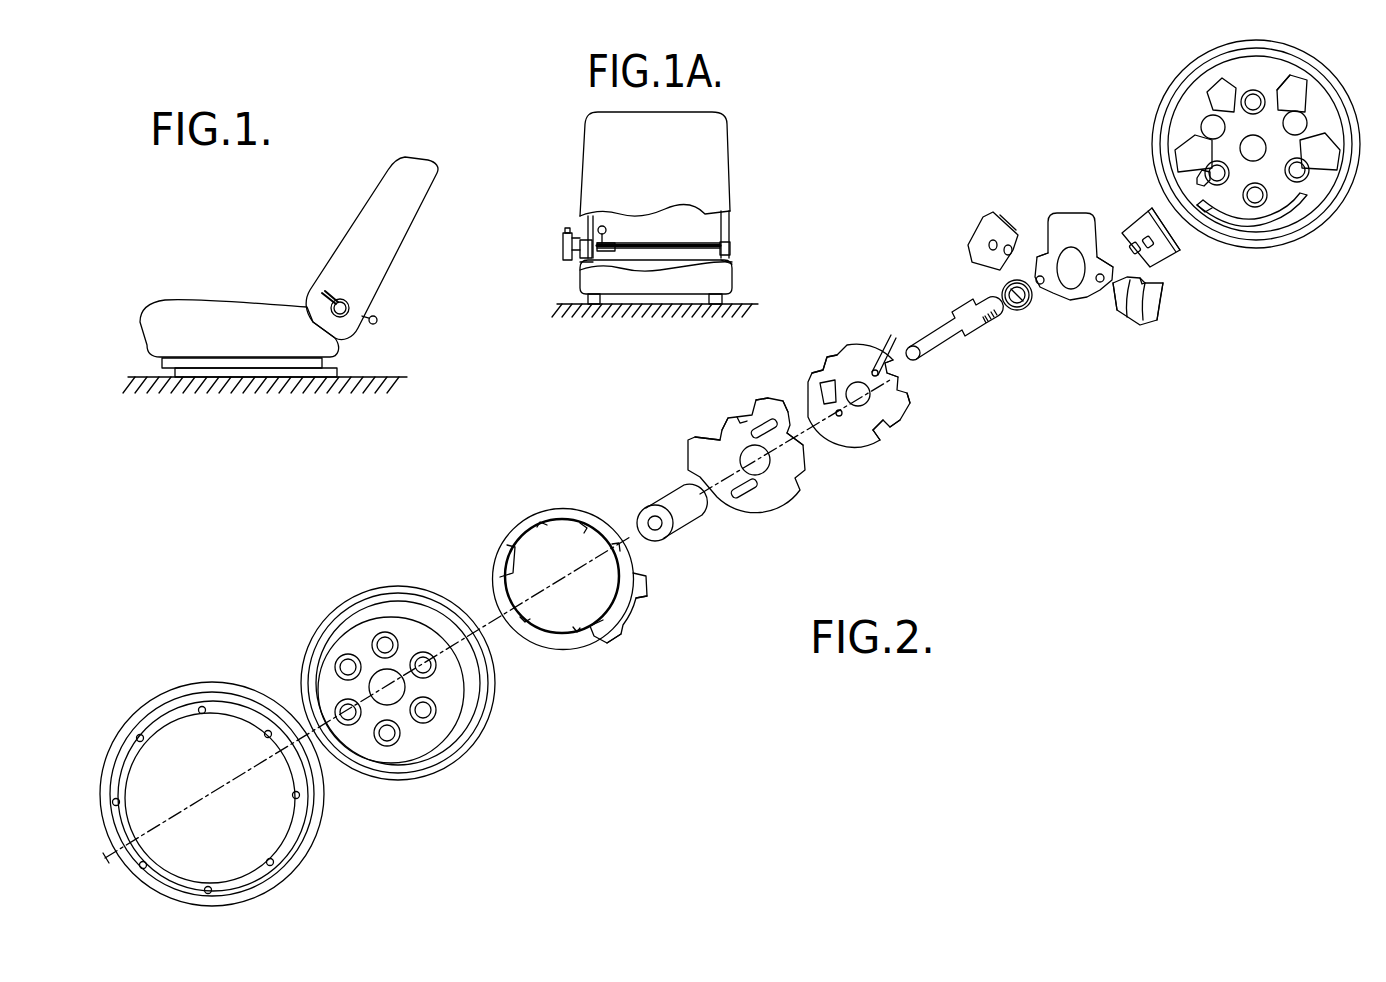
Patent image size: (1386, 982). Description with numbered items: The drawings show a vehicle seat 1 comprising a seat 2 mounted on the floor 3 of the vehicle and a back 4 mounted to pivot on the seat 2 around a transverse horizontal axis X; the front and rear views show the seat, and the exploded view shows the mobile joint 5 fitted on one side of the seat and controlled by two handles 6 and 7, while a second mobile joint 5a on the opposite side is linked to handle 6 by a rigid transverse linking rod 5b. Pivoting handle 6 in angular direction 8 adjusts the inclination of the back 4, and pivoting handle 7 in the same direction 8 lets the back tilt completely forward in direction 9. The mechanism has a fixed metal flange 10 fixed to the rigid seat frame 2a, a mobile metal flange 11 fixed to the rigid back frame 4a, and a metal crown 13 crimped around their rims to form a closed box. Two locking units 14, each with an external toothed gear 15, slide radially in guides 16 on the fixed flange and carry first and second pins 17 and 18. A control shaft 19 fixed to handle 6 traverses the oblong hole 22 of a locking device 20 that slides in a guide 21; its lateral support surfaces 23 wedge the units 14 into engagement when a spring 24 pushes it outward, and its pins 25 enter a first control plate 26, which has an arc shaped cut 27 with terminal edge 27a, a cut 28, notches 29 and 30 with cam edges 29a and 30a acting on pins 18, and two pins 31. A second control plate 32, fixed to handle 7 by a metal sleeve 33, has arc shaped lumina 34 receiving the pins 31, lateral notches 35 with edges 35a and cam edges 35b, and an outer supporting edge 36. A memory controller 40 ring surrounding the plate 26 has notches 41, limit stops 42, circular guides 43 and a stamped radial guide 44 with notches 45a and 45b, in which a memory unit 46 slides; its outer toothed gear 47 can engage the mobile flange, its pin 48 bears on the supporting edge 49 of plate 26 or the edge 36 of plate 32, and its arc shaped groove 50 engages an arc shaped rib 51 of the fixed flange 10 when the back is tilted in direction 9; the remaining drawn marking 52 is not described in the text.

In FIG. 1, the vehicle seat 1 is at (300, 238).
In FIG. 1A, the vehicle seat 1 is at (575, 120).
In FIG. 1, the seat 2 is at (194, 317).
In FIG. 1A, the seat 2 is at (695, 278).
In FIG. 1A, the rigid seat frame 2a is at (583, 262).
In FIG. 1, the floor 3 is at (148, 377).
In FIG. 1A, the floor 3 is at (740, 305).
In FIG. 1, the back 4 is at (413, 192).
In FIG. 1A, the back 4 is at (713, 138).
In FIG. 1A, the rigid back frame 4a is at (591, 247).
In FIG. 1, the mobile joint 5 is at (338, 322).
In FIG. 1A, the mobile joint 5 is at (585, 245).
In FIG. 2, the mobile joint 5 is at (500, 500).
In FIG. 1A, the second mobile joint 5a is at (727, 242).
In FIG. 1A, the rigid transverse linking rod 5b is at (663, 252).
In FIG. 1, the handle 6 is at (330, 293).
In FIG. 1A, the handle 6 is at (565, 238).
In FIG. 1, the handle 7 is at (377, 320).
In FIG. 1A, the handle 7 is at (607, 242).
In FIG. 1, the angular direction 8 is at (310, 258).
In FIG. 2, the angular direction 8 is at (905, 500).
In FIG. 1, the direction 9 is at (303, 168).
In FIG. 2, the direction 9 is at (714, 660).
In FIG. 2, the fixed metal flange 10 is at (1160, 120).
In FIG. 2, the mobile metal flange 11 is at (435, 762).
In FIG. 2, the metal crown 13 is at (293, 860).
In FIG. 2, the locking unit 14 is at (982, 227).
In FIG. 2, the external toothed gear 15 is at (980, 230).
In FIG. 2, the guide 16 is at (1195, 113).
In FIG. 2, the first pin 17 is at (993, 222).
In FIG. 2, the second pin 18 is at (1007, 248).
In FIG. 2, the control shaft 19 is at (945, 338).
In FIG. 2, the locking device 20 is at (1068, 303).
In FIG. 2, the guide 21 is at (1273, 92).
In FIG. 2, the oblong hole 22 is at (1073, 247).
In FIG. 2, the lateral support surface 23 is at (1037, 257).
In FIG. 2, the spring 24 is at (1002, 290).
In FIG. 2, the pin 25 is at (1035, 293).
In FIG. 2, the first control plate 26 is at (896, 425).
In FIG. 2, the arc shaped cut 27 is at (878, 432).
In FIG. 2, the terminal edge 27a is at (872, 428).
In FIG. 2, the cut 28 is at (828, 407).
In FIG. 2, the notch 29 is at (903, 383).
In FIG. 2, the cam edge 29a is at (903, 396).
In FIG. 2, the notch 30 is at (822, 362).
In FIG. 2, the cam edge 30a is at (833, 357).
In FIG. 2, the pin 31 is at (880, 356).
In FIG. 2, the second control plate 32 is at (723, 520).
In FIG. 1A, the metal sleeve 33 is at (600, 257).
In FIG. 2, the metal sleeve 33 is at (673, 528).
In FIG. 2, the oblong arc shaped lumina 34 is at (766, 440).
In FIG. 2, the lateral notch 35 is at (718, 423).
In FIG. 2, the edge 35a is at (718, 440).
In FIG. 2, the cam edge 35b is at (741, 420).
In FIG. 2, the outer supporting edge 36 is at (792, 515).
In FIG. 2, the memory controller 40 is at (567, 510).
In FIG. 2, the notch 41 is at (608, 547).
In FIG. 2, the limit stop 42 is at (527, 528).
In FIG. 2, the circular guide 43 is at (584, 530).
In FIG. 2, the stamped radial guide 44 is at (640, 605).
In FIG. 2, the notch 45a is at (608, 606).
In FIG. 2, the notch 45b is at (623, 617).
In FIG. 2, the memory unit 46 is at (1142, 317).
In FIG. 2, the outer toothed gear 47 is at (1157, 313).
In FIG. 2, the pin 48 is at (1132, 313).
In FIG. 2, the outer supporting edge 49 is at (910, 410).
In FIG. 2, the arc shaped groove 50 is at (1167, 288).
In FIG. 2, the arc shaped rib 51 is at (1293, 210).
In FIG. 2, the slot end 52 is at (1215, 213).
In FIG. 1, the transverse horizontal axis X is at (347, 308).
In FIG. 2, the transverse horizontal axis X is at (108, 858).